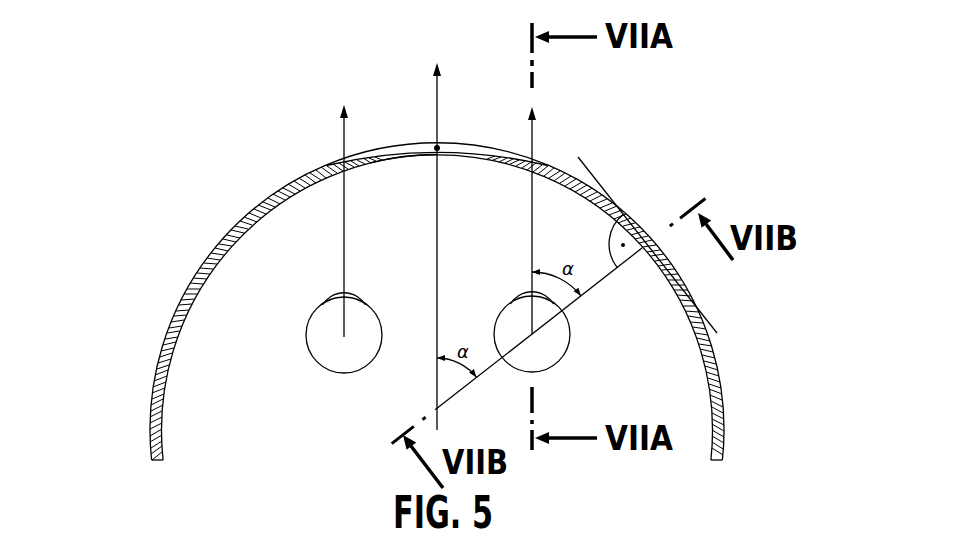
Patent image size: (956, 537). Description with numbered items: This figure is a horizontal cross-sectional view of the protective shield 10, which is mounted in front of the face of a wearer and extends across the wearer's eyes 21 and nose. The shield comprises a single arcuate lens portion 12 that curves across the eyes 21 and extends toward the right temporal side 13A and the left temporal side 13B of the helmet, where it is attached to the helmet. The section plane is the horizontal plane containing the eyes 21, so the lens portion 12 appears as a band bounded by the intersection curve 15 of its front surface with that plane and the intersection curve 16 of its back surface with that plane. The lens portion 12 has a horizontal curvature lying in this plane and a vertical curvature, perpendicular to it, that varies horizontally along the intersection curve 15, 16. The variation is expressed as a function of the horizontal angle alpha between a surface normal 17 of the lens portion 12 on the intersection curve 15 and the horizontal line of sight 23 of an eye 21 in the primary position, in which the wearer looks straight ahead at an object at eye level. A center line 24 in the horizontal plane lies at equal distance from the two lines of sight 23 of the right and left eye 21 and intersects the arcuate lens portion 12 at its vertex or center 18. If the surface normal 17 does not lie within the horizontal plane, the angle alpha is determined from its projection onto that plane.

The protective shield 10 is at (437, 267).
The arcuate lens portion 12 is at (274, 195).
The right temporal side 13A is at (737, 446).
The left temporal side 13B is at (140, 446).
The intersection curve of front surface 15 is at (380, 150).
The intersection curve of back surface 16 is at (393, 163).
The surface normal 17 is at (613, 277).
The vertex or center of the arcuate lens portion 18 is at (440, 146).
The eye 21 is at (306, 337).
The horizontal line of sight 23 is at (342, 254).
The center line 24 is at (436, 254).